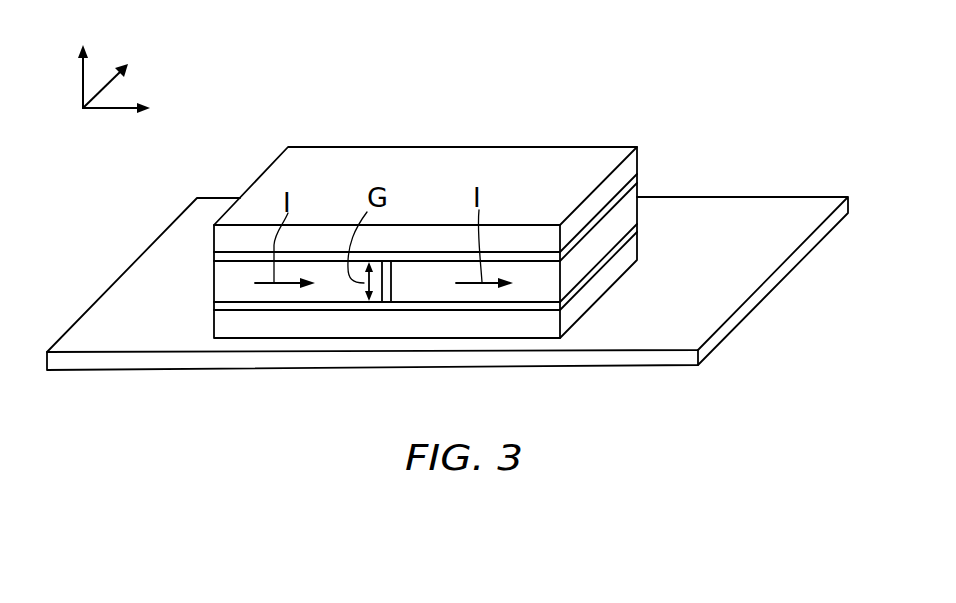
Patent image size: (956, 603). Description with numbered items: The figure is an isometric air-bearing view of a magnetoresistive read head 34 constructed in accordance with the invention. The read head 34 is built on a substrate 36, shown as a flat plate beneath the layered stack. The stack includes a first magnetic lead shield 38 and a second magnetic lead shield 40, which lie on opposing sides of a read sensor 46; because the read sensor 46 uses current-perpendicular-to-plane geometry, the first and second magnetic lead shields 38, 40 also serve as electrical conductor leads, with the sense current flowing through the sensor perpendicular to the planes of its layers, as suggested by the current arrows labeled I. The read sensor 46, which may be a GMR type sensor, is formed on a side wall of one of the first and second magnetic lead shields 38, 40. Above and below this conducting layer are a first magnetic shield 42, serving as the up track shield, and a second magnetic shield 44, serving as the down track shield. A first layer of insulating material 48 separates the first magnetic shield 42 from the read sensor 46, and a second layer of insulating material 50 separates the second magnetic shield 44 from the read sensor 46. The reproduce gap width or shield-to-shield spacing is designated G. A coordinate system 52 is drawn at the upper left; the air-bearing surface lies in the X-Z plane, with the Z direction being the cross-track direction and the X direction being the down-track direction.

The read head 34 is at (566, 97).
The substrate 36 is at (727, 323).
The first magnetic lead shield 38 is at (286, 295).
The second magnetic lead shield 40 is at (487, 292).
The first magnetic shield 42 is at (522, 322).
The second magnetic shield 44 is at (320, 235).
The read sensor 46 is at (390, 300).
The first layer of insulating material 48 is at (327, 305).
The second layer of insulating material 50 is at (443, 255).
The coordinate system 52 is at (107, 113).